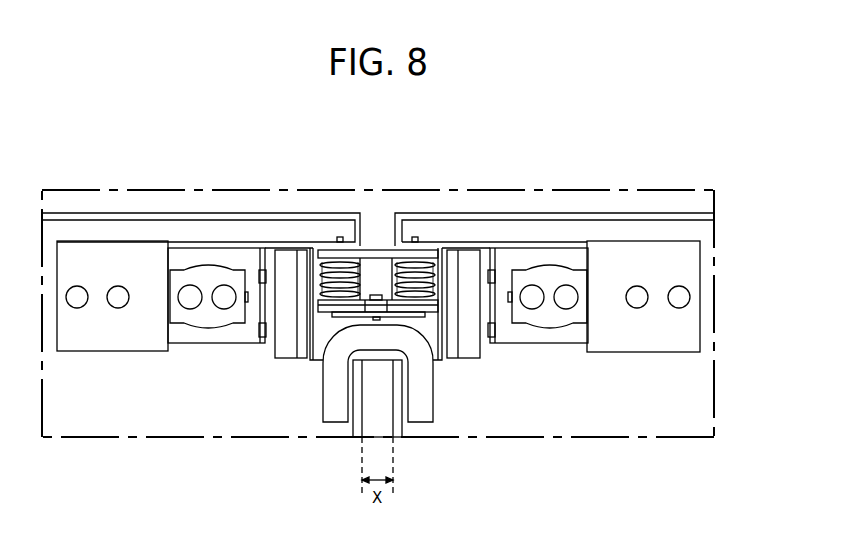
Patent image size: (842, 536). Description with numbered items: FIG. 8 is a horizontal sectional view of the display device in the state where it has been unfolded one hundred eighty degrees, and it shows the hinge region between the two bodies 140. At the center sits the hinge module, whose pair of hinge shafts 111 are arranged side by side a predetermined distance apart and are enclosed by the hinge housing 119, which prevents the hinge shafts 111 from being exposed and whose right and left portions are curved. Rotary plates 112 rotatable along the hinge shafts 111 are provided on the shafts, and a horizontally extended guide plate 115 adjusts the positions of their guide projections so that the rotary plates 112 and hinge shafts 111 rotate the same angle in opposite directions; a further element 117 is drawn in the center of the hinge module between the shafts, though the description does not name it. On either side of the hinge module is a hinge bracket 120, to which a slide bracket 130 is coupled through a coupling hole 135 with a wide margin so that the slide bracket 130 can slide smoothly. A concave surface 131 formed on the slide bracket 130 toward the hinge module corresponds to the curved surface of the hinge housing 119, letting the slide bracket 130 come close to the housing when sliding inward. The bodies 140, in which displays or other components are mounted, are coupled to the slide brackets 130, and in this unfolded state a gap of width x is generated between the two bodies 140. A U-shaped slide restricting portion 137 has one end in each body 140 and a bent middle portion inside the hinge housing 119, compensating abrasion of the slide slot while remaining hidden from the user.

The hinge shaft 111 is at (337, 258).
The rotary plate 112 is at (333, 308).
The guide plate 115 is at (343, 327).
The shaft 117 is at (377, 305).
The hinge housing 119 is at (307, 281).
The hinge bracket 120 is at (560, 247).
The slide bracket 130 is at (648, 322).
The concave surface 131 is at (450, 360).
The coupling hole 135 is at (548, 322).
The slide restricting portion 137 is at (338, 408).
The body 140 is at (620, 217).